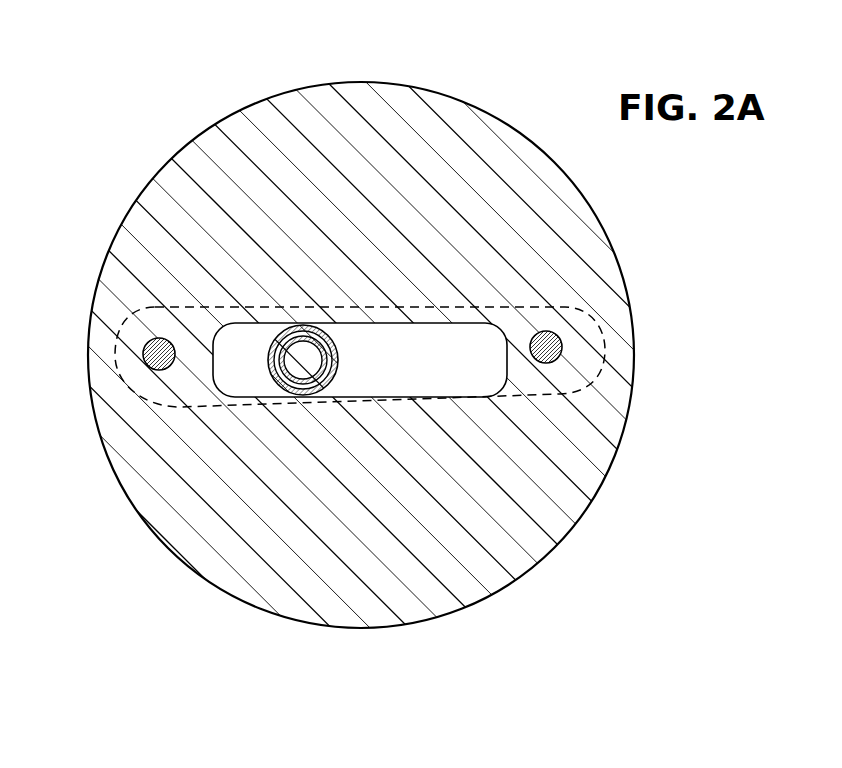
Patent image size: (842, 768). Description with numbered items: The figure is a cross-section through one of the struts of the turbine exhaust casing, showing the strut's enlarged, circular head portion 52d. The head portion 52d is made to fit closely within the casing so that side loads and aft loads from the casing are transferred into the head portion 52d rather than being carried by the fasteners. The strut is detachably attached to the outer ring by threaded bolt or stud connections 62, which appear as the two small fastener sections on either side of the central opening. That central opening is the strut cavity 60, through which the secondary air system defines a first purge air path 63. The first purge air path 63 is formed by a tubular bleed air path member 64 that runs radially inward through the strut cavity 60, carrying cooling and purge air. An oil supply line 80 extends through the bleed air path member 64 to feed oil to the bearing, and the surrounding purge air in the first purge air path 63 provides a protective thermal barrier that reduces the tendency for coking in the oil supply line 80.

The head portion 52d is at (563, 497).
The strut cavity 60 is at (453, 347).
The bolt or stud connections 62 is at (148, 342).
The first purge air path 63 is at (290, 338).
The tubular bleed air path member 64 is at (322, 342).
The oil supply line 80 is at (226, 201).